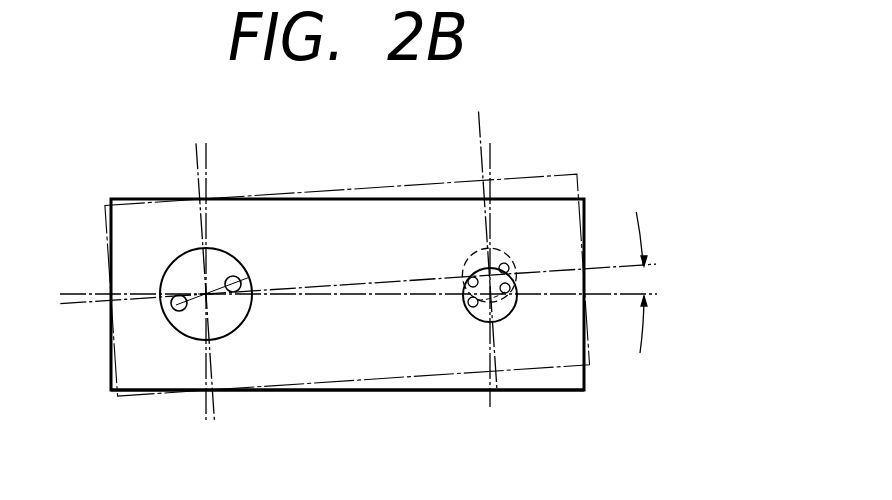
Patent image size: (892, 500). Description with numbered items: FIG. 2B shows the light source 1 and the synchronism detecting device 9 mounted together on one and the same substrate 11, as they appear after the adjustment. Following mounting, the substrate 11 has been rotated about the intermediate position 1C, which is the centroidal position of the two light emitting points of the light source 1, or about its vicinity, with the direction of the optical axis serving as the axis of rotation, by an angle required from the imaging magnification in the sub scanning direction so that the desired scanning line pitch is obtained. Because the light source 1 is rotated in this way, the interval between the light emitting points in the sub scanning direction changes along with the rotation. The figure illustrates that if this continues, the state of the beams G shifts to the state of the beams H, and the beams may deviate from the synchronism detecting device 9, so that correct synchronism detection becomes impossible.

The light source 1 is at (242, 330).
The intermediate position 1C is at (200, 297).
The synchronism detecting device 9 is at (507, 322).
The substrate 11 is at (585, 202).
The state of the beams H is at (545, 175).
The state of the beams G is at (568, 397).